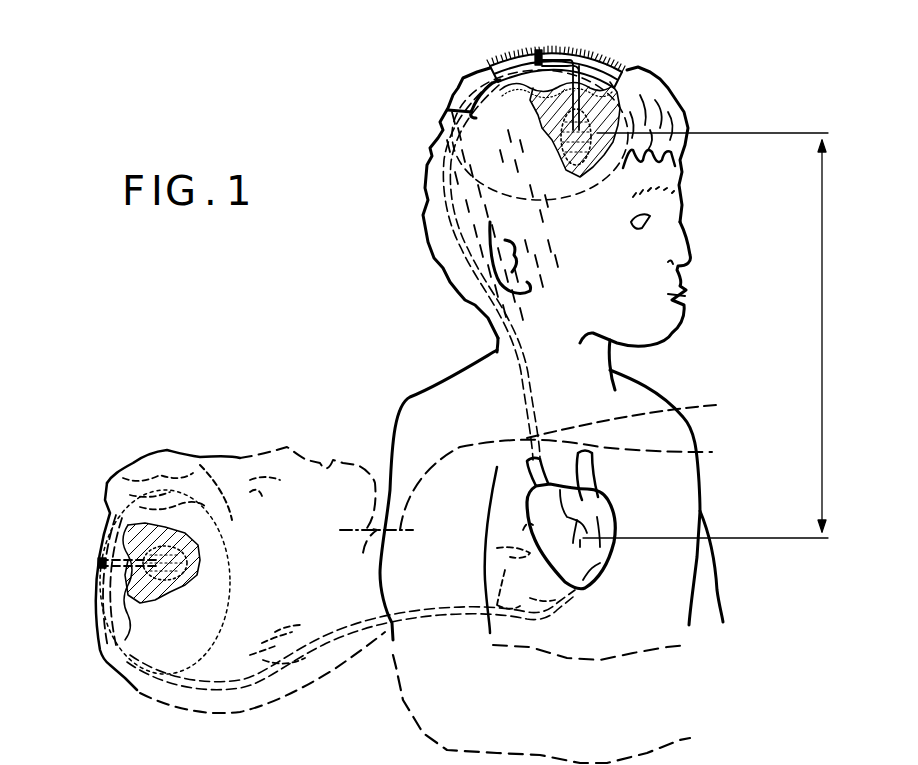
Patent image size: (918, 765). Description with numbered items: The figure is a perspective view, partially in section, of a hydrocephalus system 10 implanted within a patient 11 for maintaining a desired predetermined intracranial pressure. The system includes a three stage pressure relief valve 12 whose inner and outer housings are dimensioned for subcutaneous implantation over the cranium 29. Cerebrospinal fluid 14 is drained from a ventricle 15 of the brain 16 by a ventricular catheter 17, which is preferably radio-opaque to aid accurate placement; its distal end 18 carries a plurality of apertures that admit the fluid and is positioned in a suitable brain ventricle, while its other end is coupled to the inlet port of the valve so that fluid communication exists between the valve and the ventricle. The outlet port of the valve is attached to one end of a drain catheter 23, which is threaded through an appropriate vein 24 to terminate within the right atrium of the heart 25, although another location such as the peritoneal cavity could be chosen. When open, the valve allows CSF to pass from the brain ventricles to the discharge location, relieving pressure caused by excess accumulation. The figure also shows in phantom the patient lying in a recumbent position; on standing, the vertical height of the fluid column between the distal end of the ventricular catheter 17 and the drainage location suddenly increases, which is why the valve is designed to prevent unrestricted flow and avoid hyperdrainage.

The hydrocephalus system 10 is at (579, 52).
The patient 11 is at (682, 481).
The three stage pressure relief valve 12 is at (538, 51).
The cerebrospinal fluid 14 is at (617, 80).
The ventricle 15 is at (570, 155).
The brain 16 is at (580, 125).
The ventricular catheter 17 is at (597, 65).
The distal end 18 is at (582, 125).
The drain catheter 23 is at (522, 350).
The vein 24 is at (530, 481).
The heart 25 is at (598, 590).
The cranium 29 is at (448, 110).